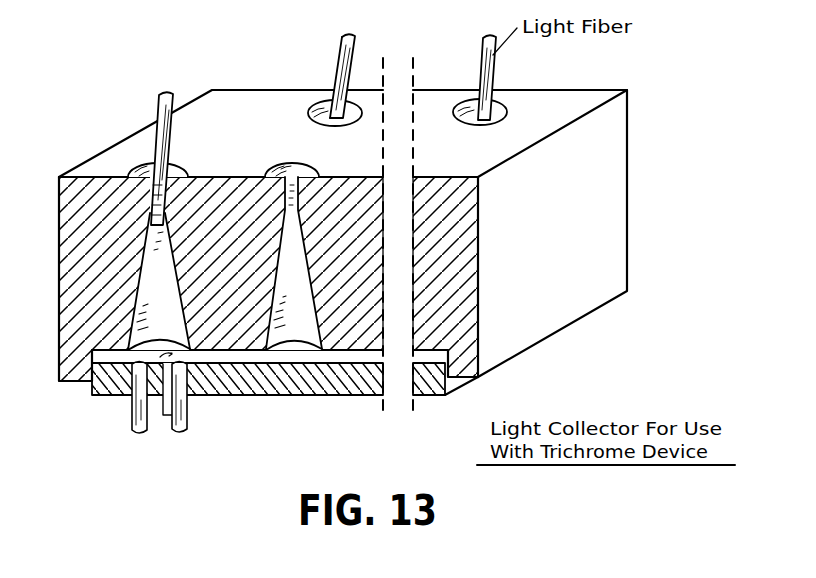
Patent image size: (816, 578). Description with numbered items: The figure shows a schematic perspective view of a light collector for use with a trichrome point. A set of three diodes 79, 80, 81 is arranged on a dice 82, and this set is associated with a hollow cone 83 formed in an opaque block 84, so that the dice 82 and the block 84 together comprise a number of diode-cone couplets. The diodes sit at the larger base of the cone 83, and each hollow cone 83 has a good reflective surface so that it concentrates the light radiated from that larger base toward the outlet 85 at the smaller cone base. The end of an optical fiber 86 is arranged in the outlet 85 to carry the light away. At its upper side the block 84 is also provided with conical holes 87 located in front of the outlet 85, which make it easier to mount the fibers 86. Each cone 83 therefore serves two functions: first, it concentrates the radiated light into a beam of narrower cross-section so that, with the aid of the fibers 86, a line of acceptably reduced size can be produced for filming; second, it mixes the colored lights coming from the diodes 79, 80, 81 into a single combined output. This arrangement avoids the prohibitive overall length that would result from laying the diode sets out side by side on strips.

The diode 79 is at (181, 398).
The diode 80 is at (197, 402).
The diode 81 is at (190, 393).
The dice 82 is at (322, 383).
The hollow cone 83 is at (159, 306).
The opaque block 84 is at (121, 142).
The outlet 85 is at (294, 263).
The optical fiber 86 is at (169, 145).
The conical hole 87 is at (298, 162).